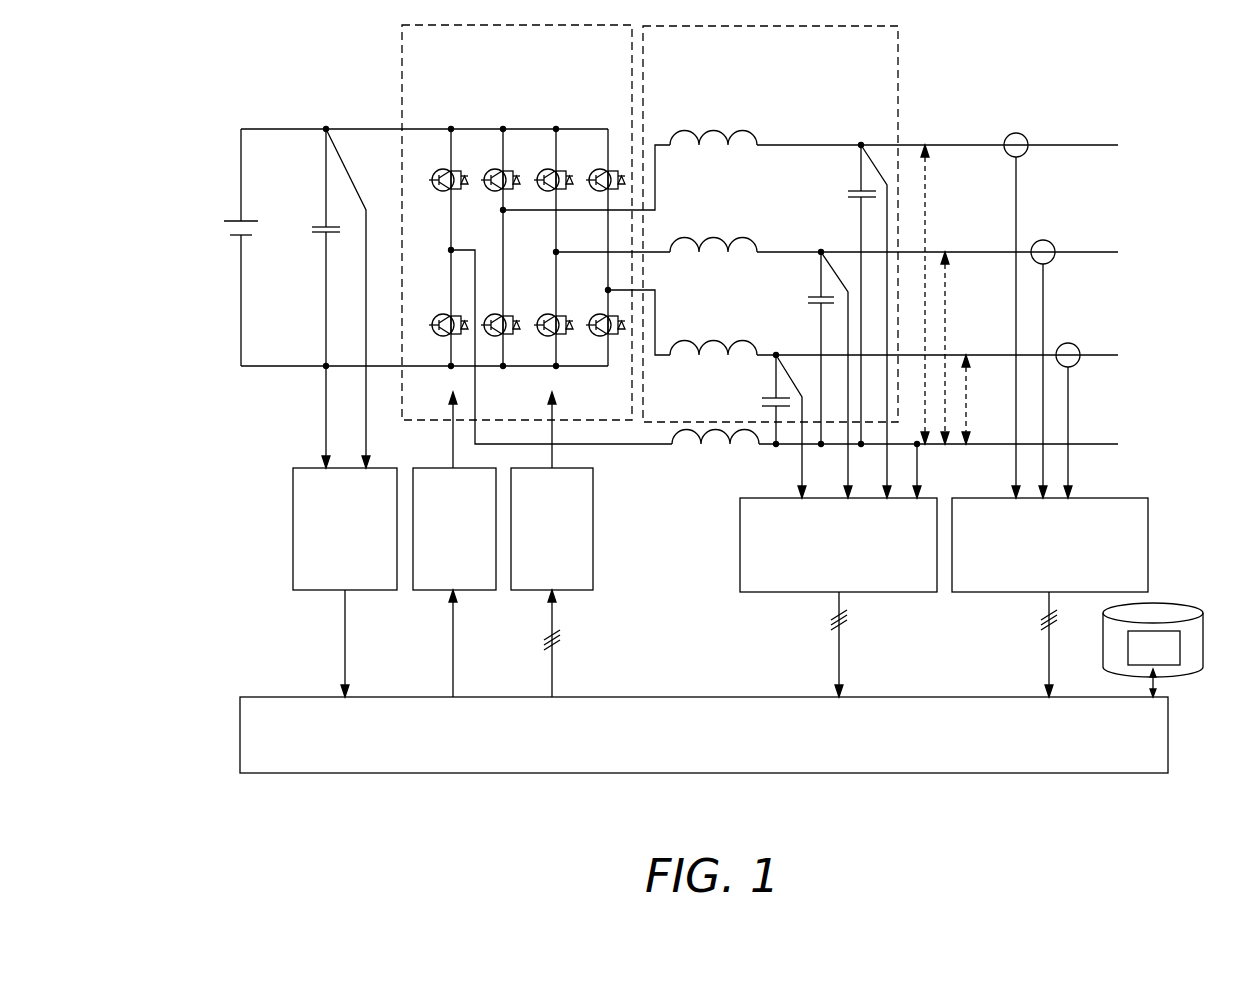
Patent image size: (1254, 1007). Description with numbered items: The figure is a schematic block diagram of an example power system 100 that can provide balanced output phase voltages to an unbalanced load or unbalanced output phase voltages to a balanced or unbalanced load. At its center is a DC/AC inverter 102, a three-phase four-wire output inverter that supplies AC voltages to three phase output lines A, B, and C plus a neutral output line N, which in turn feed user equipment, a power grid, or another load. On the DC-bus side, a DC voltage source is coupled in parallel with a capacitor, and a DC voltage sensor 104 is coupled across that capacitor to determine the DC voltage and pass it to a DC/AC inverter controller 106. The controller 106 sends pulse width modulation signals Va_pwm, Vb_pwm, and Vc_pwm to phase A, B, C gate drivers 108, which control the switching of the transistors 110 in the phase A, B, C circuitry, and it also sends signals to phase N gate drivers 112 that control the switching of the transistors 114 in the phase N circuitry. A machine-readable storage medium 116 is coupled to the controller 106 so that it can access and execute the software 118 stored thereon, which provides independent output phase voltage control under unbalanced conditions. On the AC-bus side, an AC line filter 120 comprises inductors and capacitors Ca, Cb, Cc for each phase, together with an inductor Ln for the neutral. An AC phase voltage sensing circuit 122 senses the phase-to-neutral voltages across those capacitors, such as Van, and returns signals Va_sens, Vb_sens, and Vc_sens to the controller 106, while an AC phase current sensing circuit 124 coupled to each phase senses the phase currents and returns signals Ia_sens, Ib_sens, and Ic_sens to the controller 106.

The power system 100 is at (245, 492).
The DC/AC inverter 102 is at (402, 80).
The DC voltage sensor 104 is at (293, 578).
The DC/AC inverter controller 106 is at (240, 735).
The phase A, B, C gate drivers 108 is at (593, 530).
The transistors 110 is at (607, 338).
The phase N gate drivers 112 is at (430, 592).
The transistors 114 is at (437, 331).
The machine-readable storage media 116 is at (1158, 603).
The software 118 is at (1180, 650).
The AC line filter 120 is at (898, 84).
The AC phase voltage sensing circuit 122 is at (740, 545).
The AC phase current sensing circuit 124 is at (1148, 515).